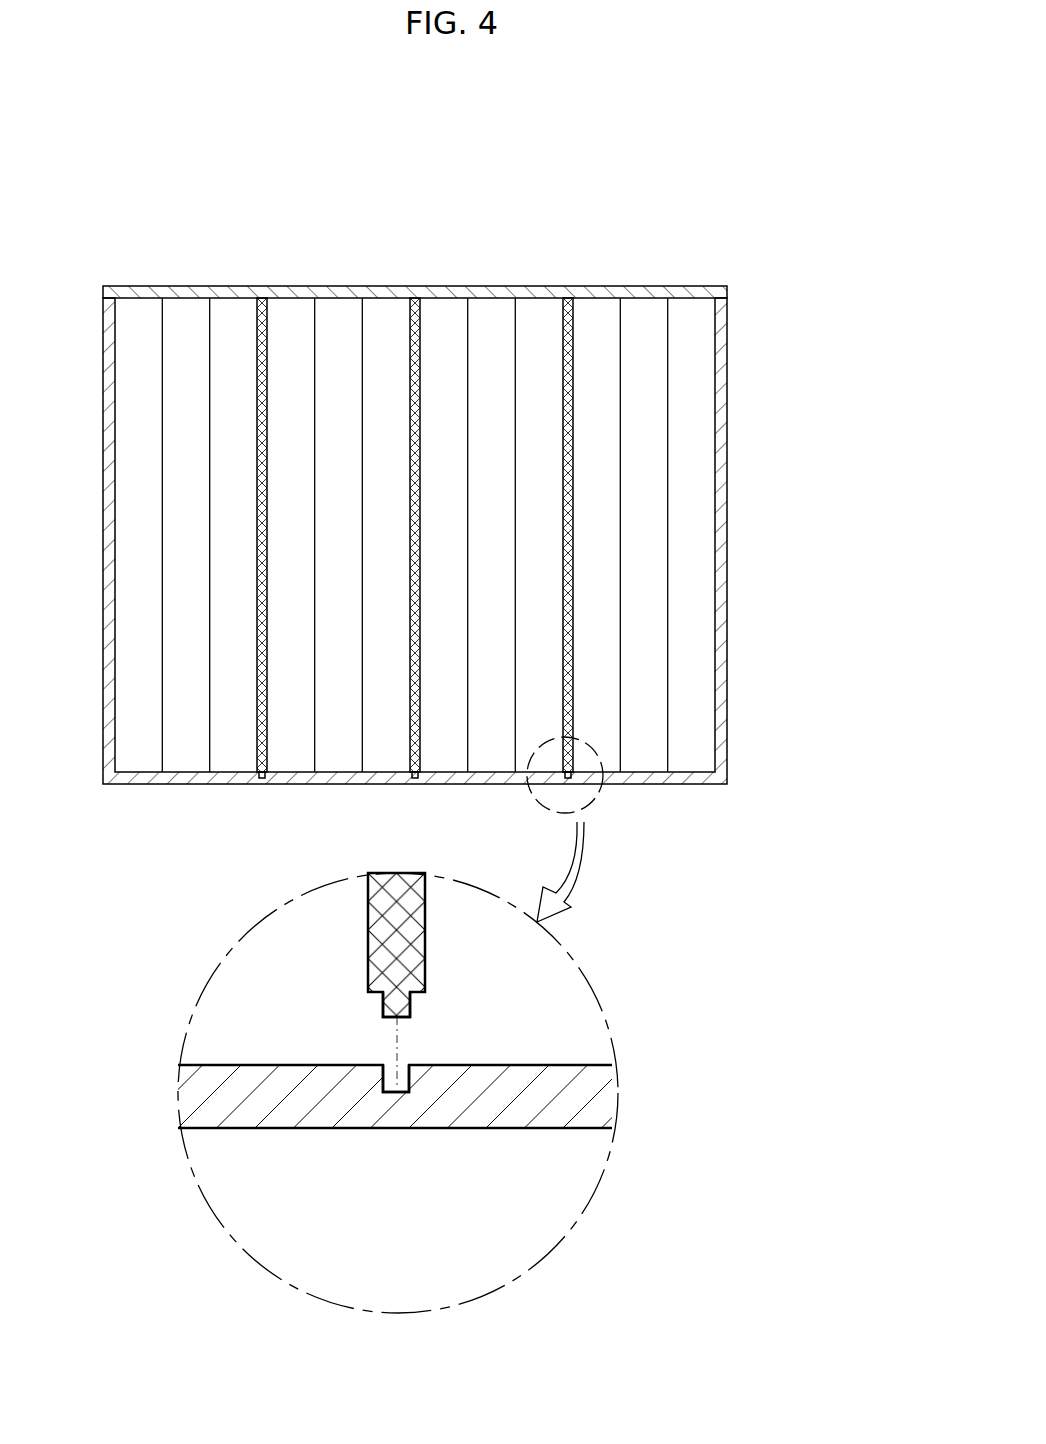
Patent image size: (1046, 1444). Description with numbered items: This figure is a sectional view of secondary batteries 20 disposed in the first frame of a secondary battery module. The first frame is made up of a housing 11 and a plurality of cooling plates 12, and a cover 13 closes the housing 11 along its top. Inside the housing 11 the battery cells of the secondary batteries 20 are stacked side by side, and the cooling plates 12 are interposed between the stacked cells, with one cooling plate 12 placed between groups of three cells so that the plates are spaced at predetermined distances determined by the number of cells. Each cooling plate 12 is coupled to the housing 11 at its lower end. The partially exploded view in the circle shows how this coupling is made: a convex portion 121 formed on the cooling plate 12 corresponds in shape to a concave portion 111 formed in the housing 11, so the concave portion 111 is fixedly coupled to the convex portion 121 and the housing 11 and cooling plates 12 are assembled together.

The housing 11 is at (728, 692).
The cooling plate 12 is at (575, 580).
The cover 13 is at (646, 286).
The secondary battery 20 is at (690, 408).
The concave portion 111 is at (402, 1075).
The convex portion 121 is at (383, 1005).